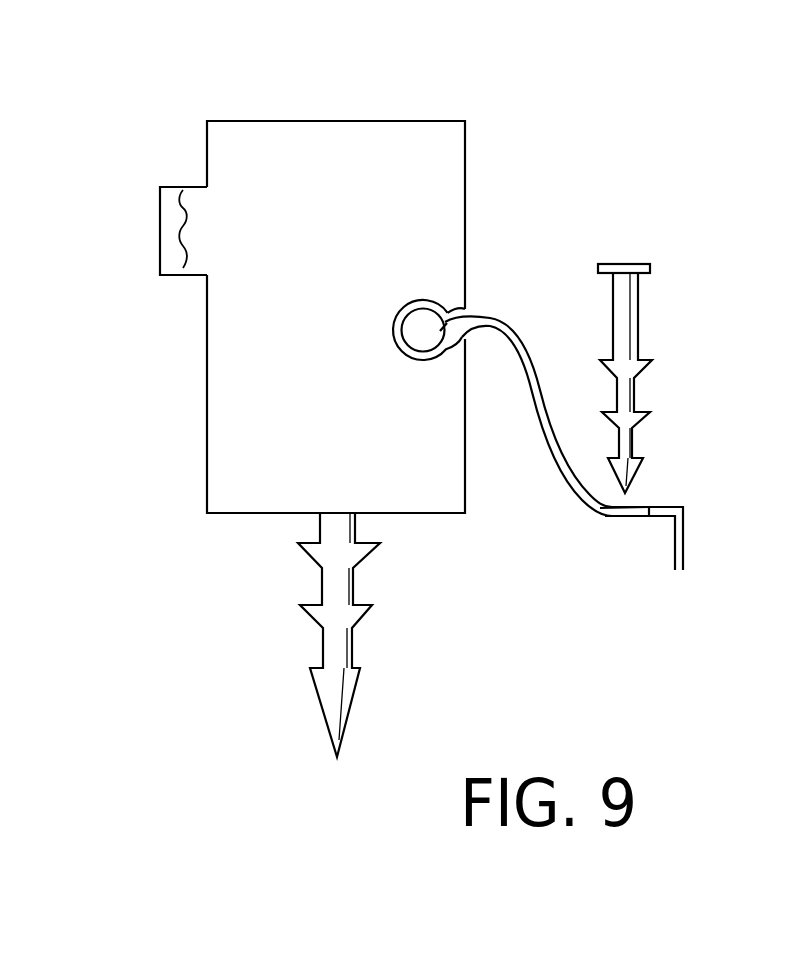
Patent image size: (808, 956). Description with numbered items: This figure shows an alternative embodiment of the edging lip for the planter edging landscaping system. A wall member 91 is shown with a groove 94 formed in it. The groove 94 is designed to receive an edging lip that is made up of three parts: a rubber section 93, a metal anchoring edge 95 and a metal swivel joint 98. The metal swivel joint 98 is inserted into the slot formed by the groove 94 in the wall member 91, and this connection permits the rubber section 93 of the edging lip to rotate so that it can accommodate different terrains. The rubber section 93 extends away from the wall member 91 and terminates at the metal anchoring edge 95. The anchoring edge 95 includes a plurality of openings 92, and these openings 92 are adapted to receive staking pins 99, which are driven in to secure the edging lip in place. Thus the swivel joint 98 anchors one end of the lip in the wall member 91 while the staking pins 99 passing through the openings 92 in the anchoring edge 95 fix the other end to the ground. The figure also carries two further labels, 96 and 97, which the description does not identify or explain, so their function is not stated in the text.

The wall member 91 is at (206, 333).
The openings 92 is at (630, 517).
The rubber section 93 is at (591, 410).
The groove 94 is at (393, 313).
The metal anchoring edge 95 is at (684, 540).
The notch with spring 96 is at (172, 276).
The barbed spike 97 is at (331, 717).
The metal swivel joint 98 is at (452, 320).
The staking pins 99 is at (638, 322).